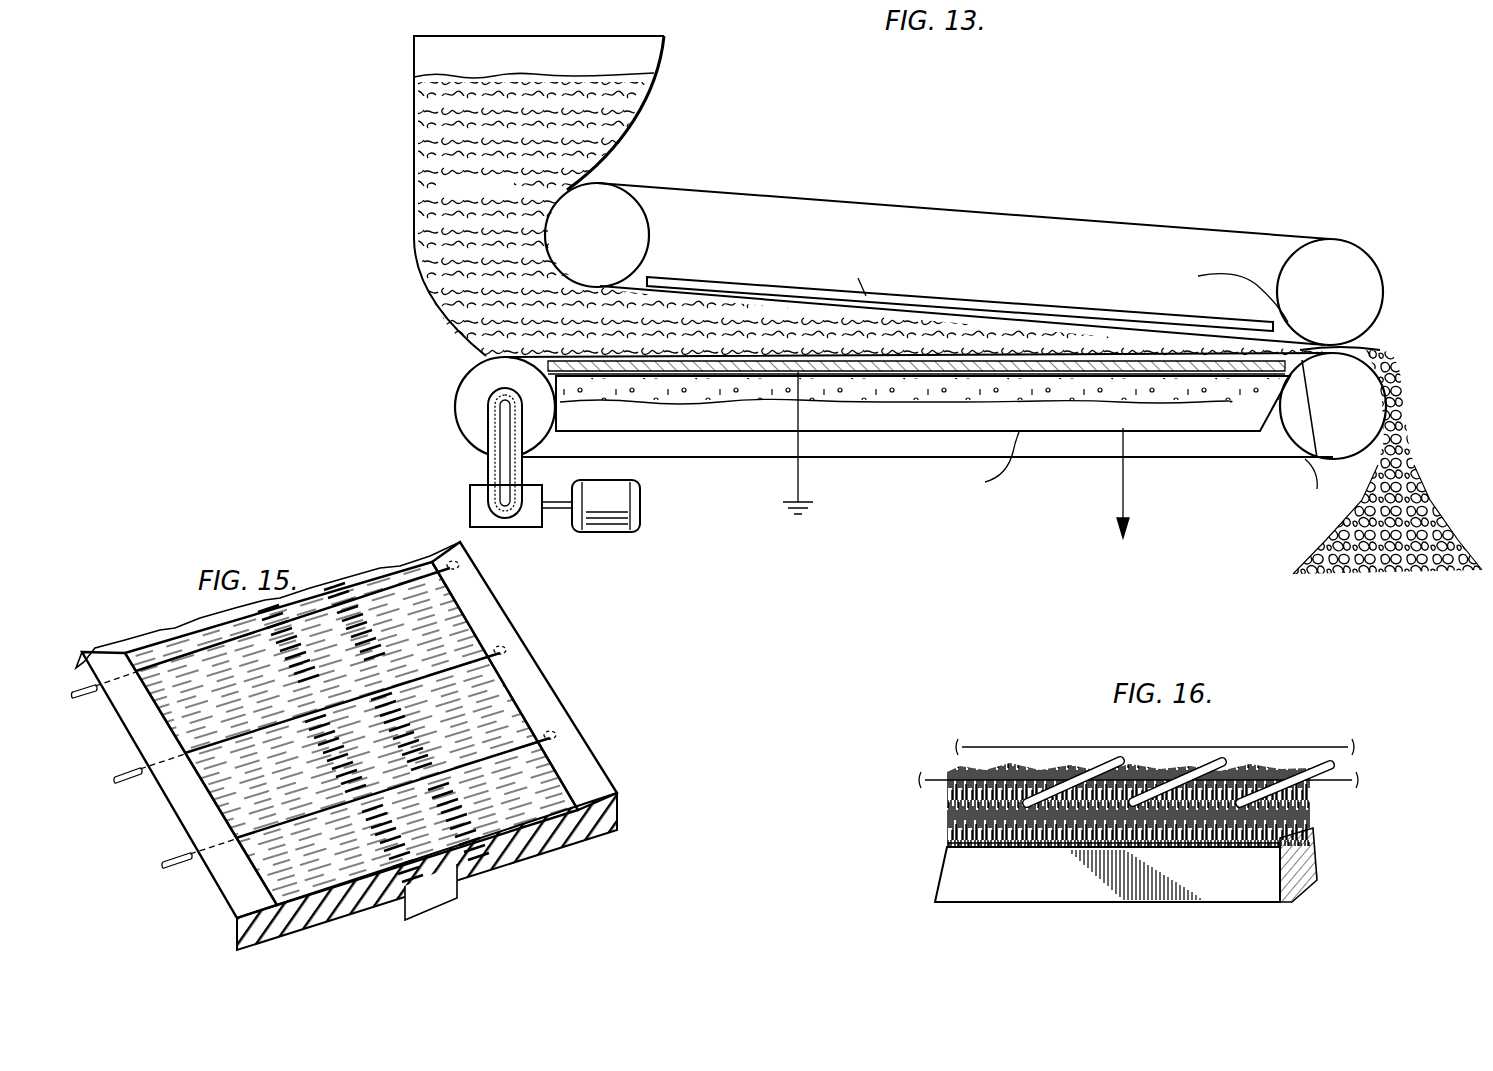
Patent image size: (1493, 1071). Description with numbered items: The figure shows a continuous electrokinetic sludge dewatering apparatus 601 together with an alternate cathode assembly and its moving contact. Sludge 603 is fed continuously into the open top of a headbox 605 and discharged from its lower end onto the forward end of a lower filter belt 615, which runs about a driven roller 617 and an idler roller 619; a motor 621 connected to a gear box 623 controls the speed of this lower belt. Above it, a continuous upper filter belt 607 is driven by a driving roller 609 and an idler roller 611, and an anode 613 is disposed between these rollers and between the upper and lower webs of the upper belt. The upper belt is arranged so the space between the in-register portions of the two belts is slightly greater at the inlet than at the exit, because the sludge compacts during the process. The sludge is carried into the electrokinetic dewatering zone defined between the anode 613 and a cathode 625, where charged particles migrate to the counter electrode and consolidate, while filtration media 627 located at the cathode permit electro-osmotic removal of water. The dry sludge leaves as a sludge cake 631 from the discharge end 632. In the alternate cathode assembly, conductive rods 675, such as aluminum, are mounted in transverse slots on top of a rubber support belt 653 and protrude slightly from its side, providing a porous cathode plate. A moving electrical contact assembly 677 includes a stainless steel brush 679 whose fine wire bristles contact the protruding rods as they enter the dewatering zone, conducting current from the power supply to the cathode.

In FIG. 13, the apparatus 601 is at (1028, 164).
In FIG. 13, the sludge 603 is at (415, 148).
In FIG. 13, the headbox 605 is at (660, 36).
In FIG. 13, the upper filter belt 607 is at (1212, 238).
In FIG. 13, the driving roller 609 is at (1360, 272).
In FIG. 13, the idler roller 611 is at (625, 200).
In FIG. 13, the anode 613 is at (727, 282).
In FIG. 13, the lower filter belt 615 is at (1080, 452).
In FIG. 13, the driven roller 617 is at (468, 406).
In FIG. 13, the idler roller 619 is at (1368, 398).
In FIG. 13, the motor 621 is at (628, 513).
In FIG. 13, the gear box 623 is at (470, 502).
In FIG. 13, the cathode 625 is at (738, 375).
In FIG. 13, the filtration media 627 is at (628, 376).
In FIG. 13, the sludge cake 631 is at (1309, 572).
In FIG. 13, the discharge end 632 is at (1372, 343).
In FIG. 15, the rubber support belt 653 is at (590, 775).
In FIG. 16, the rubber support belt 653 is at (1275, 760).
In FIG. 15, the conductive rods 675 is at (168, 854).
In FIG. 16, the conductive rods 675 is at (1103, 770).
In FIG. 16, the moving electrical contact assembly 677 is at (1036, 732).
In FIG. 16, the stainless steel brush 679 is at (950, 820).